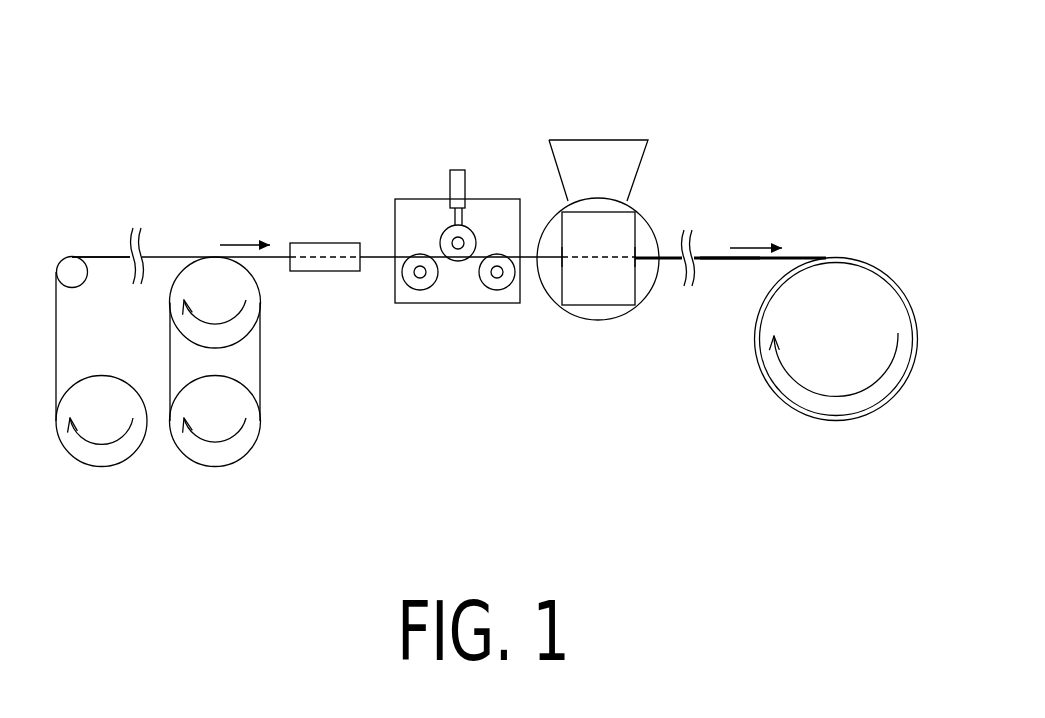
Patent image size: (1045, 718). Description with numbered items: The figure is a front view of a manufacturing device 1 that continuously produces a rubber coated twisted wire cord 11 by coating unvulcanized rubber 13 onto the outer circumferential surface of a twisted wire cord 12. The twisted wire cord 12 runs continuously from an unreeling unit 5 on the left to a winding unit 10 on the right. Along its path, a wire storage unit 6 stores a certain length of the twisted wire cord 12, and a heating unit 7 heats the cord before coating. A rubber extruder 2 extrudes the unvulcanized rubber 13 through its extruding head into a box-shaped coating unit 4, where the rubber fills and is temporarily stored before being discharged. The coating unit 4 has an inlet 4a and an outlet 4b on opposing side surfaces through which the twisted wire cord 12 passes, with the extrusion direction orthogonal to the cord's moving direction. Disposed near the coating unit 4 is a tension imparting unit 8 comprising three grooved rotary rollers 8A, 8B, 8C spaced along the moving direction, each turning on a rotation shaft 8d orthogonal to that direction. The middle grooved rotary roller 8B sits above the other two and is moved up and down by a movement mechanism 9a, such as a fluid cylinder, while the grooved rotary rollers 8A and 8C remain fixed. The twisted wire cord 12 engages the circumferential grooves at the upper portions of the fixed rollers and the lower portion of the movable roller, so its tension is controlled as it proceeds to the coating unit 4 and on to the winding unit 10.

The manufacturing device 1 is at (295, 150).
The rubber extruder 2 is at (650, 219).
The coating unit 4 is at (597, 296).
The inlet 4a is at (558, 257).
The outlet 4b is at (638, 263).
The unreeling unit 5 is at (143, 450).
The wire storage unit 6 is at (269, 368).
The heating unit 7 is at (334, 274).
The tension imparting unit 8 is at (393, 202).
The grooved rotary roller 8A is at (422, 283).
The grooved rotary roller 8B is at (457, 262).
The grooved rotary roller 8C is at (497, 292).
The rotation shaft 8d is at (413, 257).
The movement mechanism 9a is at (462, 190).
The winding unit 10 is at (764, 378).
The rubber coated twisted wire cord 11 is at (802, 257).
The twisted wire cord 12 is at (173, 255).
The unvulcanized rubber 13 is at (730, 263).